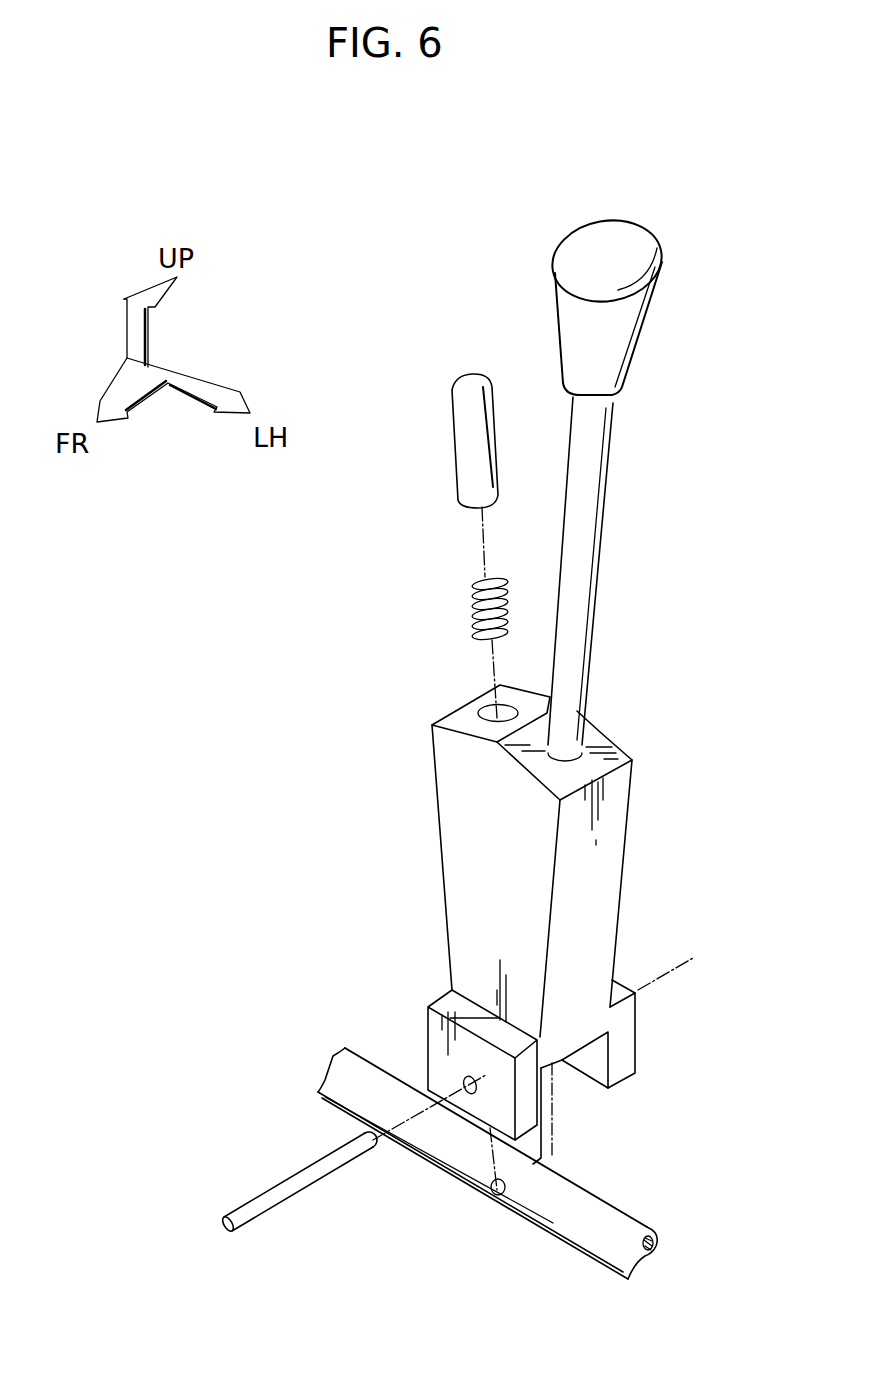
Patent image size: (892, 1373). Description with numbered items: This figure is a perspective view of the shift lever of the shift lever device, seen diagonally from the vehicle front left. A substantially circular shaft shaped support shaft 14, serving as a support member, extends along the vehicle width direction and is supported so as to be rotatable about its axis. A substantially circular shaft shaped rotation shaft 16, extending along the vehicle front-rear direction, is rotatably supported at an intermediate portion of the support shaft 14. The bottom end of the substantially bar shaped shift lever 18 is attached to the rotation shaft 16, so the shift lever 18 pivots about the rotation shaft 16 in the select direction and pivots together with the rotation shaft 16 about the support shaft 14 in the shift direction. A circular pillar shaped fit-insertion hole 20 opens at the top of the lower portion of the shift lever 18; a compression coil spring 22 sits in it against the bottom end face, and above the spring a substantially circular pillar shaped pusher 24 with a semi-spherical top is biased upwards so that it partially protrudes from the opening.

The support shaft 14 is at (623, 1203).
The rotation shaft 16 is at (238, 1207).
The shift lever 18 is at (605, 512).
The fit-insertion hole 20 is at (487, 707).
The compression coil spring 22 is at (470, 606).
The pusher 24 is at (453, 425).